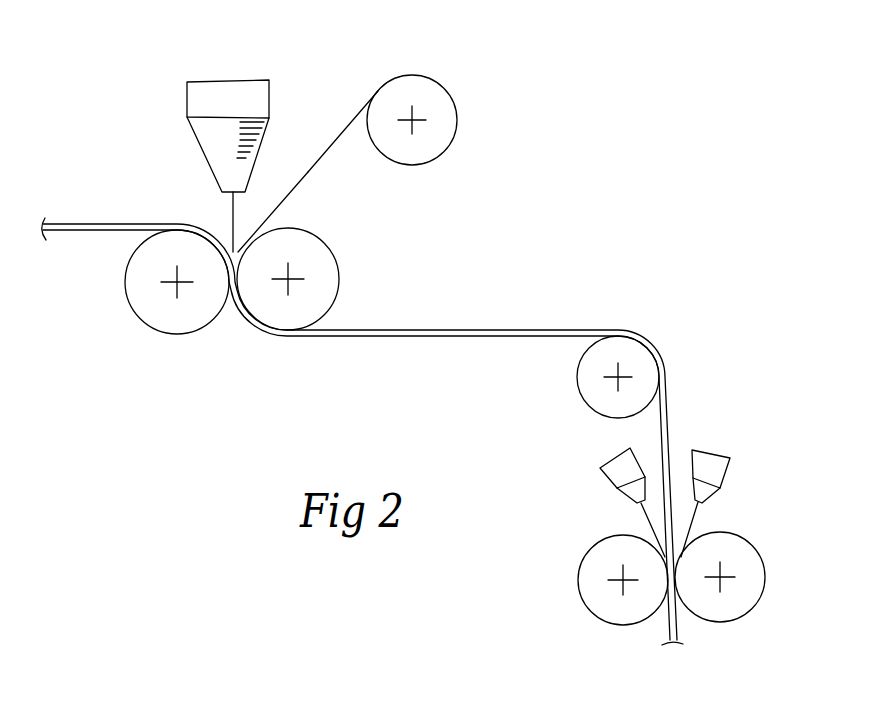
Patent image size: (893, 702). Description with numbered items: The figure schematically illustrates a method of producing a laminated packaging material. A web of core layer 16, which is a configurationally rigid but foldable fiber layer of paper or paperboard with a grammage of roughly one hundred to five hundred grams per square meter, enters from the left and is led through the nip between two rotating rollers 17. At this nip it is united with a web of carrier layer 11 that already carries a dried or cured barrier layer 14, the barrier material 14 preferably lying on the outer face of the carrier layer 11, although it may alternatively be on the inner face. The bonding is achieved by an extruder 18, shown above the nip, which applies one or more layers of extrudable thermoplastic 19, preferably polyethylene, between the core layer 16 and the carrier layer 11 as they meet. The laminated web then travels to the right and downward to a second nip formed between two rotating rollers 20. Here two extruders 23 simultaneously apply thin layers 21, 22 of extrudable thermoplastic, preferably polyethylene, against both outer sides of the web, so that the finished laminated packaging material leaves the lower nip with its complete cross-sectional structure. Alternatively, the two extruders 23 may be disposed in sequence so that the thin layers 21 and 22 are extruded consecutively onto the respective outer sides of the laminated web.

The carrier layer 11 is at (333, 143).
The barrier layer 14 is at (305, 175).
The core layer 16 is at (108, 223).
The rotating rollers 17 is at (125, 283).
The extruder 18 is at (233, 85).
The extrudable thermoplastic 19 is at (231, 218).
The rotating rollers 20 is at (580, 592).
The thin layer of extrudable thermoplastic 21 is at (646, 528).
The thin layer of extrudable thermoplastic 22 is at (693, 523).
The extruders 23 is at (599, 478).